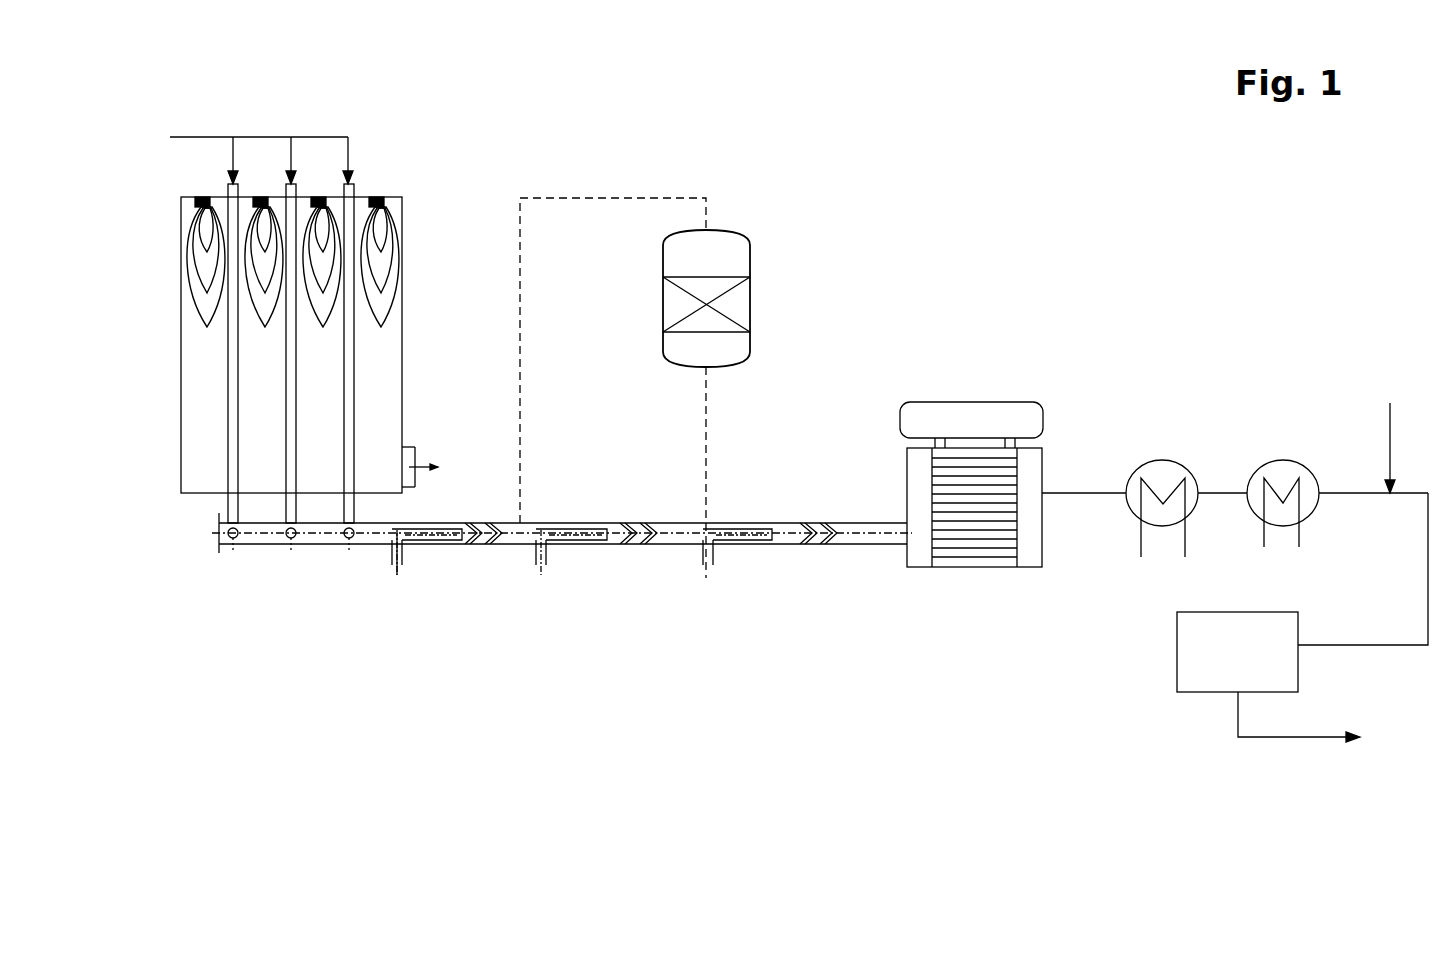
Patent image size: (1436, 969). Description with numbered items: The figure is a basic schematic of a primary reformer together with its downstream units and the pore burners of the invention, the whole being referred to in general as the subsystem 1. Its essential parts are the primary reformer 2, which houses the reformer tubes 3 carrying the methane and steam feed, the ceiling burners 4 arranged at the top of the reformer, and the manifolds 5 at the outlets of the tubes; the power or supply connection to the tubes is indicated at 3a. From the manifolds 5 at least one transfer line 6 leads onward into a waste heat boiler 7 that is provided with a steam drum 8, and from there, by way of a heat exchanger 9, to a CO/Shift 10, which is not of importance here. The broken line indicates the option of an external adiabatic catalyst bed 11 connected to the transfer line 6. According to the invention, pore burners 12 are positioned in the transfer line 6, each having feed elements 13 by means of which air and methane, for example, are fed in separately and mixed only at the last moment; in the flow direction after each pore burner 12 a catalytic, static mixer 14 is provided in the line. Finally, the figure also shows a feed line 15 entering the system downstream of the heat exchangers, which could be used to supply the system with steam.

The subsystem 1 is at (897, 204).
The primary reformer 2 is at (180, 310).
The reformer tubes 3 is at (290, 392).
The power supply lines 3a is at (185, 141).
The ceiling burners 4 is at (378, 185).
The manifolds 5 is at (350, 548).
The transfer line 6 is at (220, 540).
The waste heat boiler 7 is at (927, 562).
The steam drum 8 is at (945, 400).
The heat exchanger 9 is at (1263, 450).
The CO/Shift 10 is at (1302, 617).
The external catalyst bed 11 is at (725, 250).
The pore burners 12 is at (432, 548).
The feed elements 13 is at (390, 555).
The catalytic static mixers 14 is at (468, 522).
The feed line 15 is at (1385, 440).